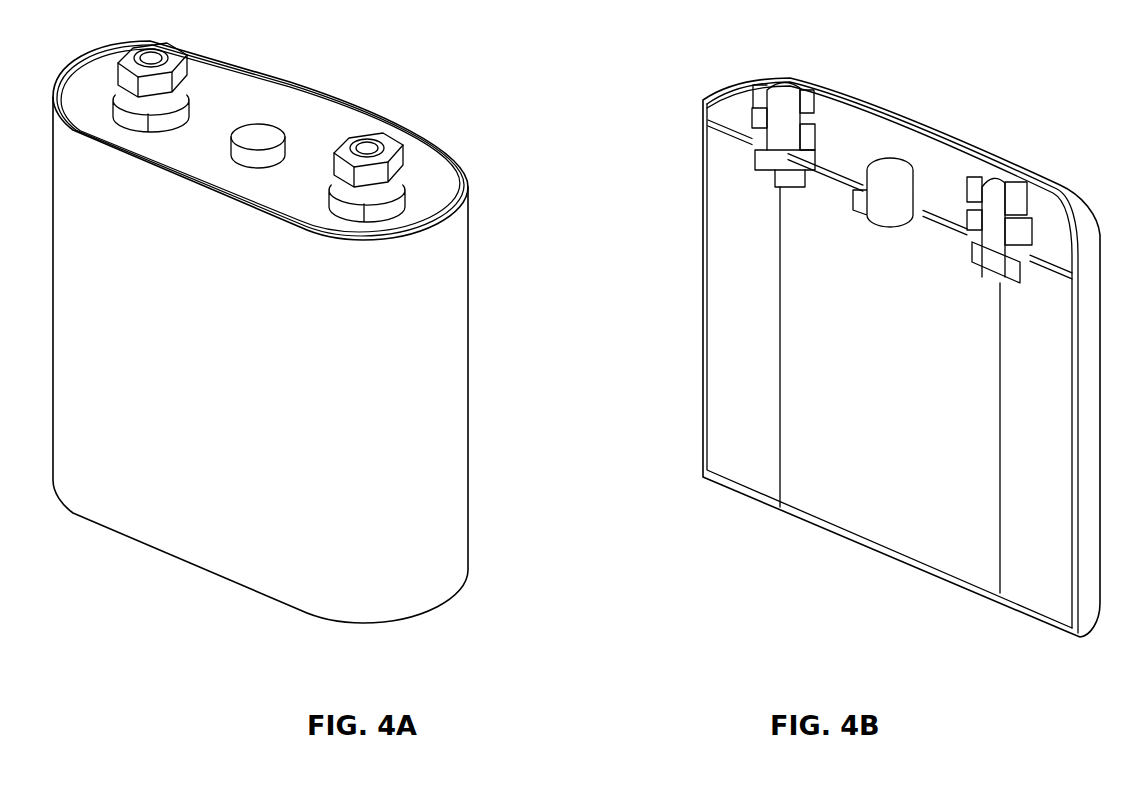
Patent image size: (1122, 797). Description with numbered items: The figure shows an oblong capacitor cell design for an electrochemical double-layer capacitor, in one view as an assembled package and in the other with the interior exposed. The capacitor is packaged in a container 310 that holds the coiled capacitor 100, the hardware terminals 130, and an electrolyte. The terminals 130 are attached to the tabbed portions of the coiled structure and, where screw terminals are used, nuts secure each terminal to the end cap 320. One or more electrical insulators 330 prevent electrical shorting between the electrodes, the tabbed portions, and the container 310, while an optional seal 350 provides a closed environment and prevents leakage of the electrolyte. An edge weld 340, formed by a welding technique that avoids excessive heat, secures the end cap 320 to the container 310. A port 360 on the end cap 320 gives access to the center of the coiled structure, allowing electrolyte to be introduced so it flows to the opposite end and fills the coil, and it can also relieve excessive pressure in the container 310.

In FIG. 4B, the coiled capacitor 100 is at (880, 399).
In FIG. 4A, the hardware terminals 130 is at (367, 148).
In FIG. 4B, the hardware terminals 130 is at (777, 120).
In FIG. 4A, the container 310 is at (472, 494).
In FIG. 4A, the end cap 320 is at (422, 205).
In FIG. 4B, the end cap 320 is at (847, 158).
In FIG. 4A, the electrical insulators 330 is at (333, 214).
In FIG. 4A, the edge weld 340 is at (467, 193).
In FIG. 4B, the seal 350 is at (975, 243).
In FIG. 4A, the port 360 is at (262, 136).